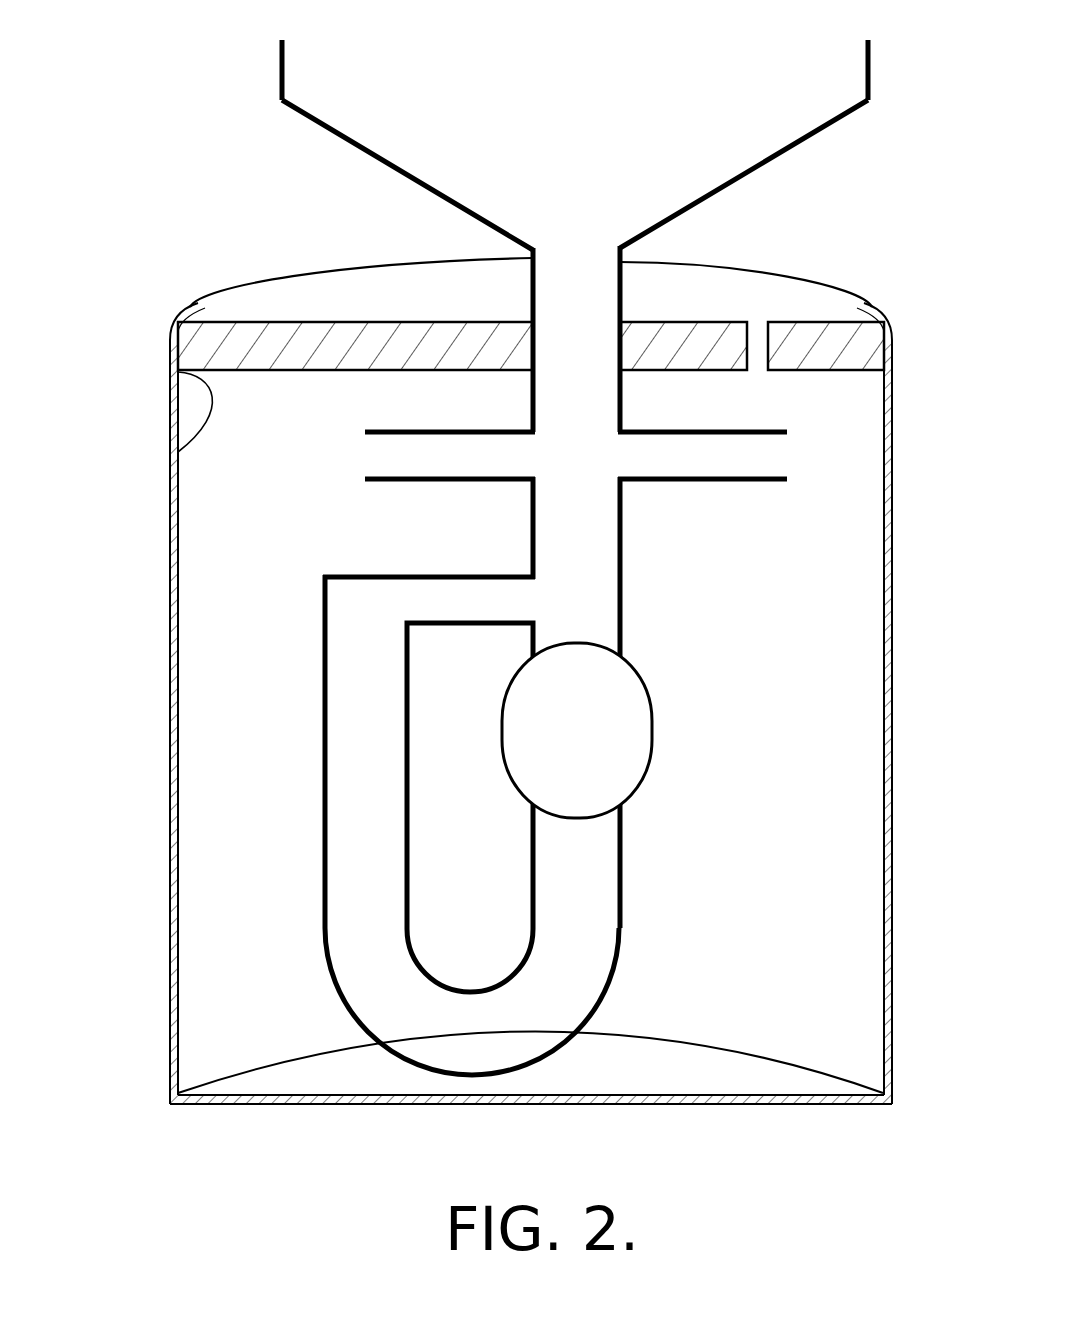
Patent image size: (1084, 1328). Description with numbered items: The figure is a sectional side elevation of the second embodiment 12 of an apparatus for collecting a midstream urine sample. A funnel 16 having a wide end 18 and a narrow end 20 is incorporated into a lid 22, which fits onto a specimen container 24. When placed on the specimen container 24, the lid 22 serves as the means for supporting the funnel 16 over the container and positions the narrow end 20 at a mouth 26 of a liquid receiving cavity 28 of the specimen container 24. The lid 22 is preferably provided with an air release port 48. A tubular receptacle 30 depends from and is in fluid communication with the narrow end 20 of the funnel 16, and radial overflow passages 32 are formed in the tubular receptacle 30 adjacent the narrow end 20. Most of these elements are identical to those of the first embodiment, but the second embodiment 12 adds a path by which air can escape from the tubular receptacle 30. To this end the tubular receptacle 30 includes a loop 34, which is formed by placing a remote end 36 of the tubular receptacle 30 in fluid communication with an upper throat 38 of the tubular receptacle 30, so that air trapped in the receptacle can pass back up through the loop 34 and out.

The second embodiment 12 is at (290, 243).
The funnel 16 is at (720, 183).
The wide end 18 is at (860, 48).
The narrow end 20 is at (522, 285).
The lid 22 is at (219, 332).
The specimen container 24 is at (170, 765).
The mouth 26 is at (178, 452).
The liquid receiving cavity 28 is at (768, 839).
The tubular receptacle 30 is at (621, 522).
The radial overflow passages 32 is at (428, 431).
The loop 34 is at (322, 712).
The remote end 36 is at (433, 576).
The upper throat 38 is at (593, 597).
The air release port 48 is at (757, 328).